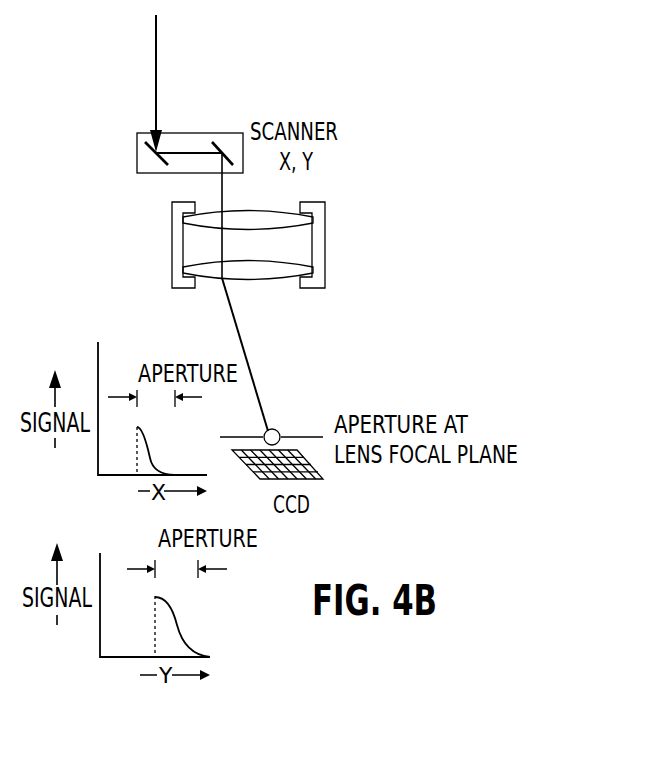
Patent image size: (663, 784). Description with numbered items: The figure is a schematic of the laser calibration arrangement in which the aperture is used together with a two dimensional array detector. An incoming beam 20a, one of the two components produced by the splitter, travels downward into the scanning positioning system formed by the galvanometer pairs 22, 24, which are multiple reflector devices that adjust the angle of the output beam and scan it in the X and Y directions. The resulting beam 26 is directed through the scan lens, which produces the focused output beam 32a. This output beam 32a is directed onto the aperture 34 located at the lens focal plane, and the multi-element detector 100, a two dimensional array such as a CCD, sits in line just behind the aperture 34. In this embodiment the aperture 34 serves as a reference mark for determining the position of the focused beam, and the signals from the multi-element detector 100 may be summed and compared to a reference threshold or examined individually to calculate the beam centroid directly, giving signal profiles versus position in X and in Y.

The beam 20a is at (156, 34).
The galvanometer pair 22 is at (246, 114).
The galvanometer pair 24 is at (219, 133).
The beam 26 is at (222, 194).
The output beam 32a is at (238, 323).
The aperture 34 is at (275, 429).
The multi-element detector 100 is at (324, 468).